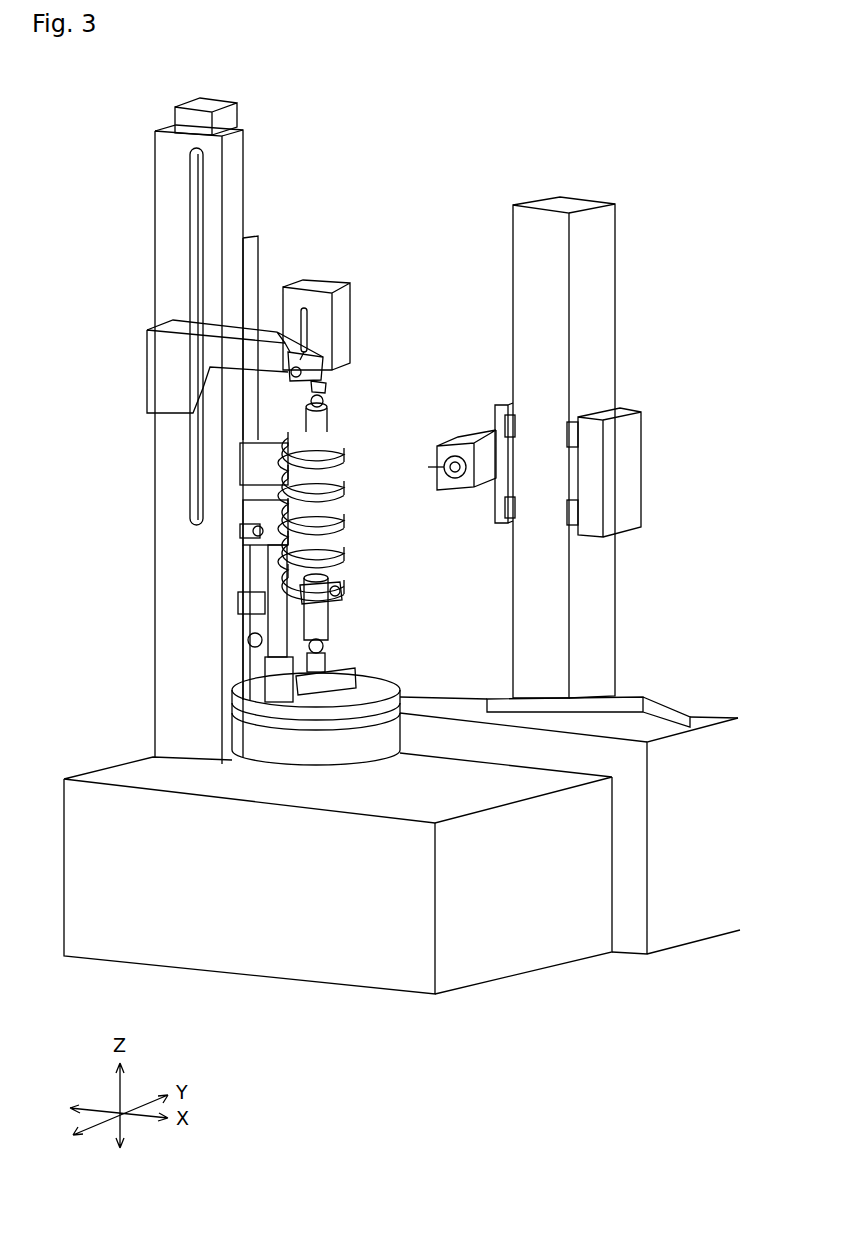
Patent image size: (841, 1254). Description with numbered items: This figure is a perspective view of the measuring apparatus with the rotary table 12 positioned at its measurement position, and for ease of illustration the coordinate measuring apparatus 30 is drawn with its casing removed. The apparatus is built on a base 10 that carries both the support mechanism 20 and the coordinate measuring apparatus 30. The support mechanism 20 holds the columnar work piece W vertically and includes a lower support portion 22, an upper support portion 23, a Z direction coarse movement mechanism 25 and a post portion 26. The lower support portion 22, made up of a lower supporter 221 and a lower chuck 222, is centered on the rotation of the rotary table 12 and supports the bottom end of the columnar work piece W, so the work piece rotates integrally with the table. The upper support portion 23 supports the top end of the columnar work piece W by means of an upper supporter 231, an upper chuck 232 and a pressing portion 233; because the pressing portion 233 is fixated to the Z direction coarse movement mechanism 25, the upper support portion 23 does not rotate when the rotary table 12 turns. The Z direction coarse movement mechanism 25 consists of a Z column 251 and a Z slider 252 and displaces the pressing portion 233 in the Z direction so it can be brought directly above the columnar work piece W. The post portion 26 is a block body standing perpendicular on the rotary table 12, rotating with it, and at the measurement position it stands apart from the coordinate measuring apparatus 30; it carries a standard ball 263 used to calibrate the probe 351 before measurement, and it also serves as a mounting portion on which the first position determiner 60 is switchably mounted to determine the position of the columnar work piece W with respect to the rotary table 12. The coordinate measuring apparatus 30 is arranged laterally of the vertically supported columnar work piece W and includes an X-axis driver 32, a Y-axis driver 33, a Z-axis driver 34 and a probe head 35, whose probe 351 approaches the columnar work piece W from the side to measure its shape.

The base 10 is at (312, 970).
The rotary table 12 is at (314, 733).
The support mechanism 20 is at (260, 78).
The lower support portion 22 is at (337, 632).
The lower supporter 221 is at (327, 646).
The lower chuck 222 is at (328, 664).
The upper support portion 23 is at (365, 355).
The upper supporter 231 is at (329, 406).
The upper chuck 232 is at (325, 387).
The pressing portion 233 is at (348, 325).
The Z direction coarse movement mechanism 25 is at (126, 350).
The Z column 251 is at (162, 240).
The Z slider 252 is at (157, 392).
The post portion 26 is at (275, 634).
The standard ball 263 is at (243, 531).
The coordinate measuring apparatus 30 is at (602, 156).
The X-axis driver 32 is at (648, 717).
The Y-axis driver 33 is at (481, 437).
The Z-axis driver 34 is at (641, 450).
The probe head 35 is at (455, 446).
The probe 351 is at (425, 468).
The first position determiner 60 is at (335, 598).
The columnar work piece W is at (347, 490).